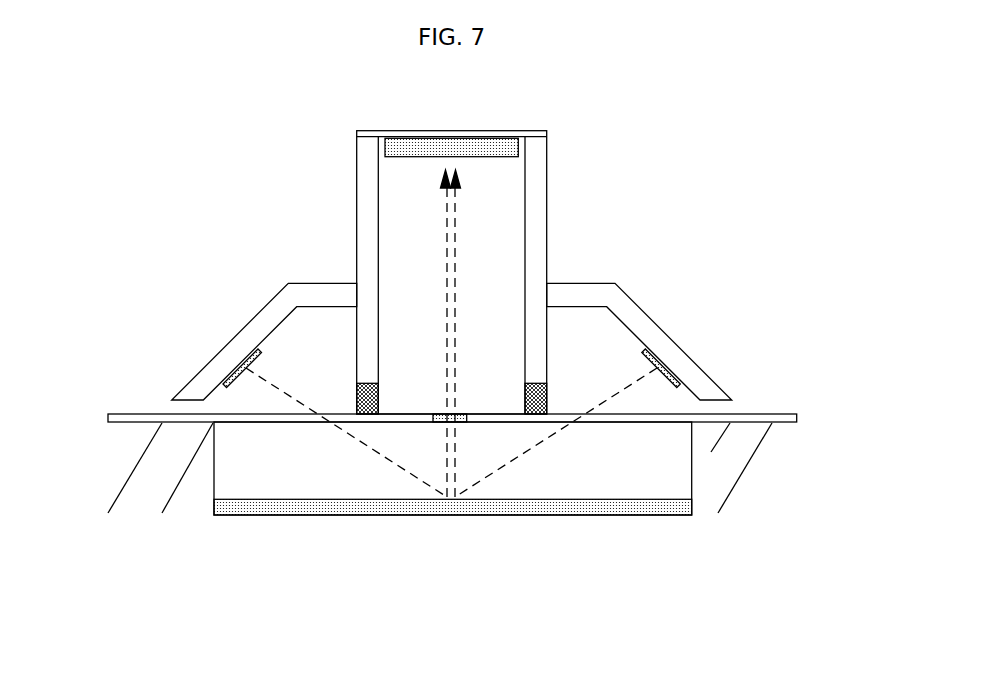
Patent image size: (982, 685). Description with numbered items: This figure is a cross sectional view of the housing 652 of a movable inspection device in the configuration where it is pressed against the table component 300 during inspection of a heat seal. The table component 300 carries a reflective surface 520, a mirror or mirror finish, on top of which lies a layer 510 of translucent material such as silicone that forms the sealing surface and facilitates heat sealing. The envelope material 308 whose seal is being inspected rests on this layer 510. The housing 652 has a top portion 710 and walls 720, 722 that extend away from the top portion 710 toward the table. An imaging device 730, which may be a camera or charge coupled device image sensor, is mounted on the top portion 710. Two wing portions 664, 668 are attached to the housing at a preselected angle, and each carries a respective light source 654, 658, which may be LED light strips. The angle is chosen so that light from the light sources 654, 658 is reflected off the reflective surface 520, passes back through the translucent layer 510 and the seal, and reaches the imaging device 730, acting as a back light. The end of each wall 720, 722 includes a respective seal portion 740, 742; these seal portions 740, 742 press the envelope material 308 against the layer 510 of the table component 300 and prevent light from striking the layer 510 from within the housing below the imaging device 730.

The table component 300 is at (123, 453).
The envelope material 308 is at (182, 423).
The layer of translucent material 510 is at (507, 500).
The reflective surface 520 is at (398, 515).
The housing 652 is at (357, 176).
The light source 654 is at (225, 373).
The light source 658 is at (678, 373).
The wing portion 664 is at (248, 322).
The wing portion 668 is at (655, 322).
The top portion 710 is at (437, 131).
The wall 720 is at (355, 255).
The wall 722 is at (547, 255).
The imaging device 730 is at (518, 149).
The seal portion 740 is at (357, 403).
The seal portion 742 is at (547, 400).